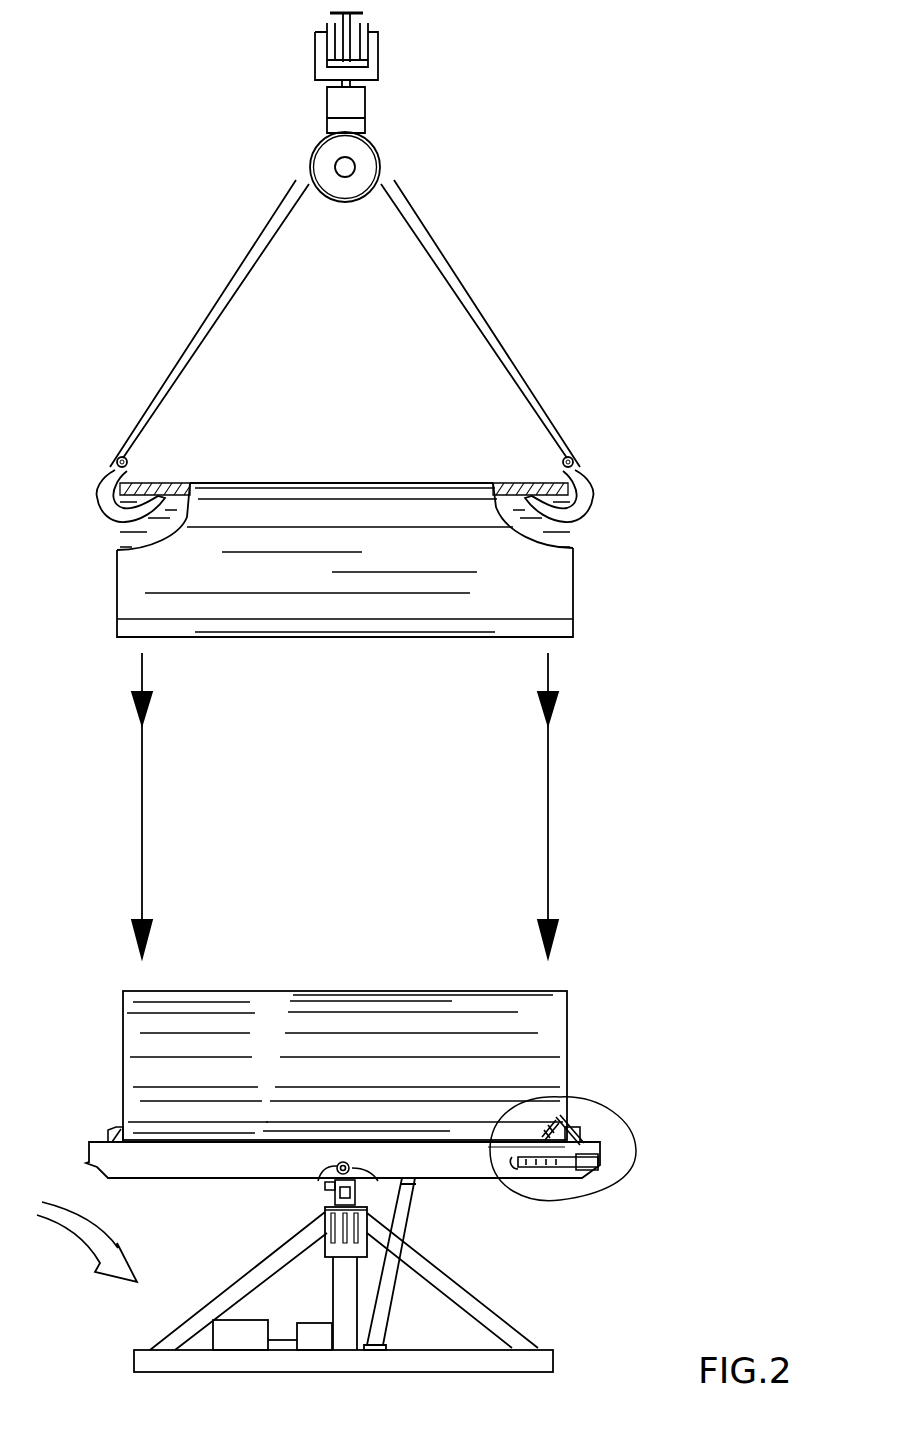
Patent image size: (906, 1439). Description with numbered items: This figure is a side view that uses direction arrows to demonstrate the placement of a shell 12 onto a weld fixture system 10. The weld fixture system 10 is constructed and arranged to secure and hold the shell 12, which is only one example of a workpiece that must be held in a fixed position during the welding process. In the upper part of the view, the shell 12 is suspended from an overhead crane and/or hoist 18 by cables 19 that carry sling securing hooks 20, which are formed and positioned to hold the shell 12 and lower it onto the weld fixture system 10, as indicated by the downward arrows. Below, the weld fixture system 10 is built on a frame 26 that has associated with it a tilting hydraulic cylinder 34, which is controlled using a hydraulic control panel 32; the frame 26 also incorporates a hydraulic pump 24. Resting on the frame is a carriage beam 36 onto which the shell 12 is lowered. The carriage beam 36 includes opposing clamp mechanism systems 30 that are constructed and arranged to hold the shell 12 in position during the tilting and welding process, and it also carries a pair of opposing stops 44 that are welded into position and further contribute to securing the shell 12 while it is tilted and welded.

The weld fixture system 10 is at (70, 1238).
The shell 12 is at (123, 1050).
The overhead crane and/or hoist 18 is at (380, 50).
The cables 19 is at (457, 277).
The sling securing hooks 20 is at (97, 498).
The hydraulic pump 24 is at (315, 1323).
The frame 26 is at (200, 1310).
The clamp mechanism system 30 is at (607, 1103).
The hydraulic control panel 32 is at (323, 1220).
The tilting hydraulic cylinder 34 is at (394, 1292).
The carriage beam 36 is at (88, 1142).
The stops 44 is at (108, 1128).